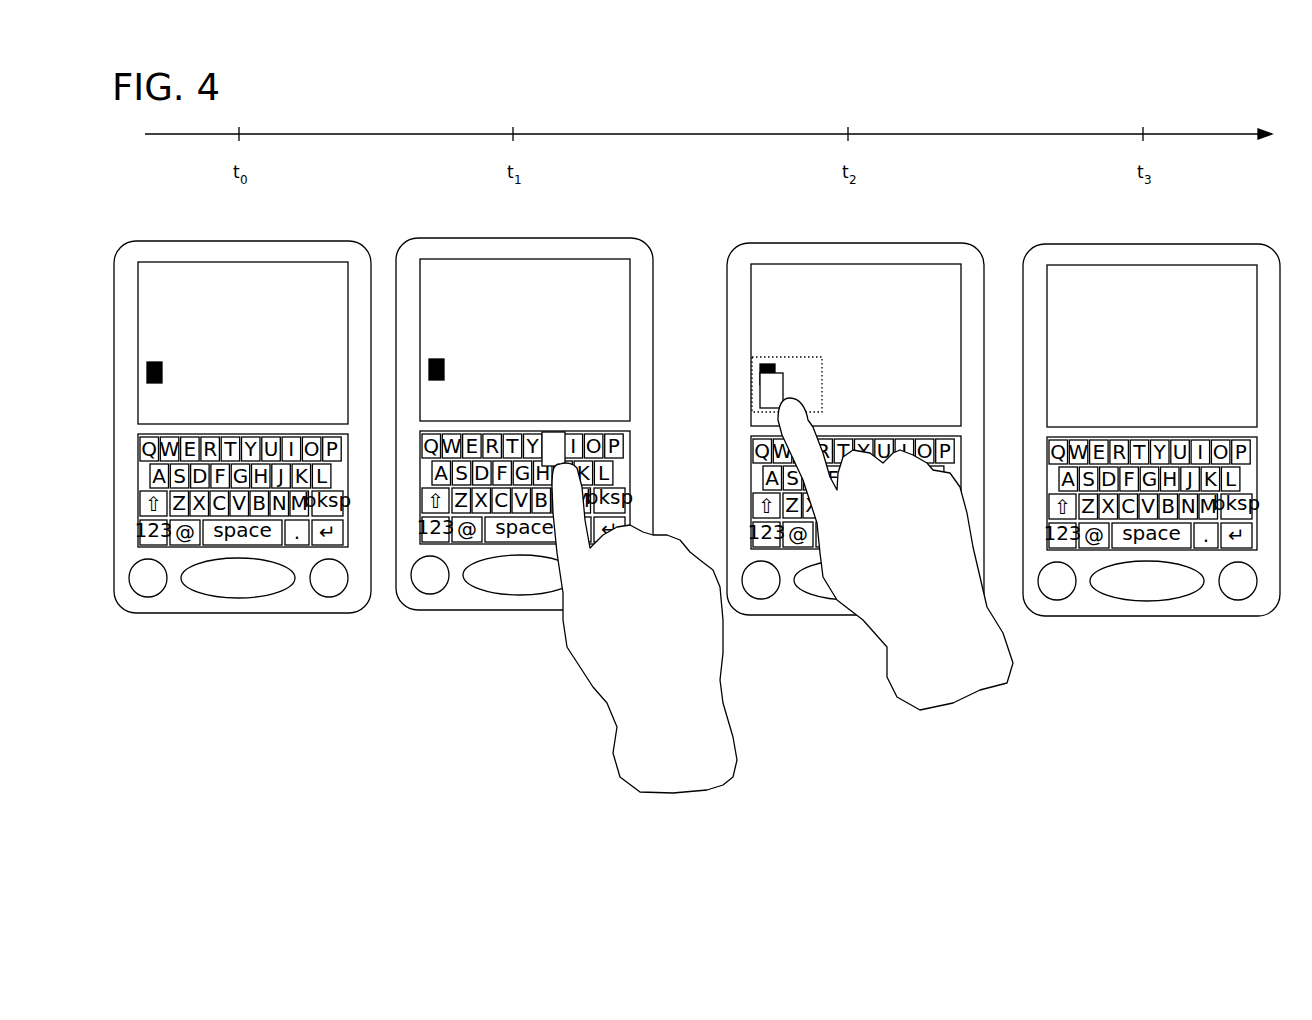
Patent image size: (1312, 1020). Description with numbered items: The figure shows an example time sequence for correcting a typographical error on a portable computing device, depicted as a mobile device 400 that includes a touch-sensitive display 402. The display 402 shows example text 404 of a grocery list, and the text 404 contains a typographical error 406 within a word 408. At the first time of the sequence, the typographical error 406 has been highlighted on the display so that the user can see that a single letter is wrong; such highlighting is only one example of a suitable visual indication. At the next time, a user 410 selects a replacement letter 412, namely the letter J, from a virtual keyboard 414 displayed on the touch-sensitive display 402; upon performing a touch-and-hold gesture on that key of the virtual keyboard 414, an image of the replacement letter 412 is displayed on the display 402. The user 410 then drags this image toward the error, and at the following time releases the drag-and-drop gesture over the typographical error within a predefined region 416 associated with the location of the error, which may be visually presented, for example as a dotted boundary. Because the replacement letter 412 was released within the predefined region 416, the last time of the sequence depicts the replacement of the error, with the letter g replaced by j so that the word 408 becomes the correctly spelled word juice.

The mobile device 400 is at (143, 613).
The touch-sensitive display 402 is at (288, 262).
The text 404 is at (256, 313).
The typographical error 406 is at (152, 384).
The word 408 is at (191, 386).
The user 410 is at (640, 757).
The replacement letter 412 is at (546, 431).
The virtual keyboard 414 is at (612, 424).
The predefined region 416 is at (824, 374).